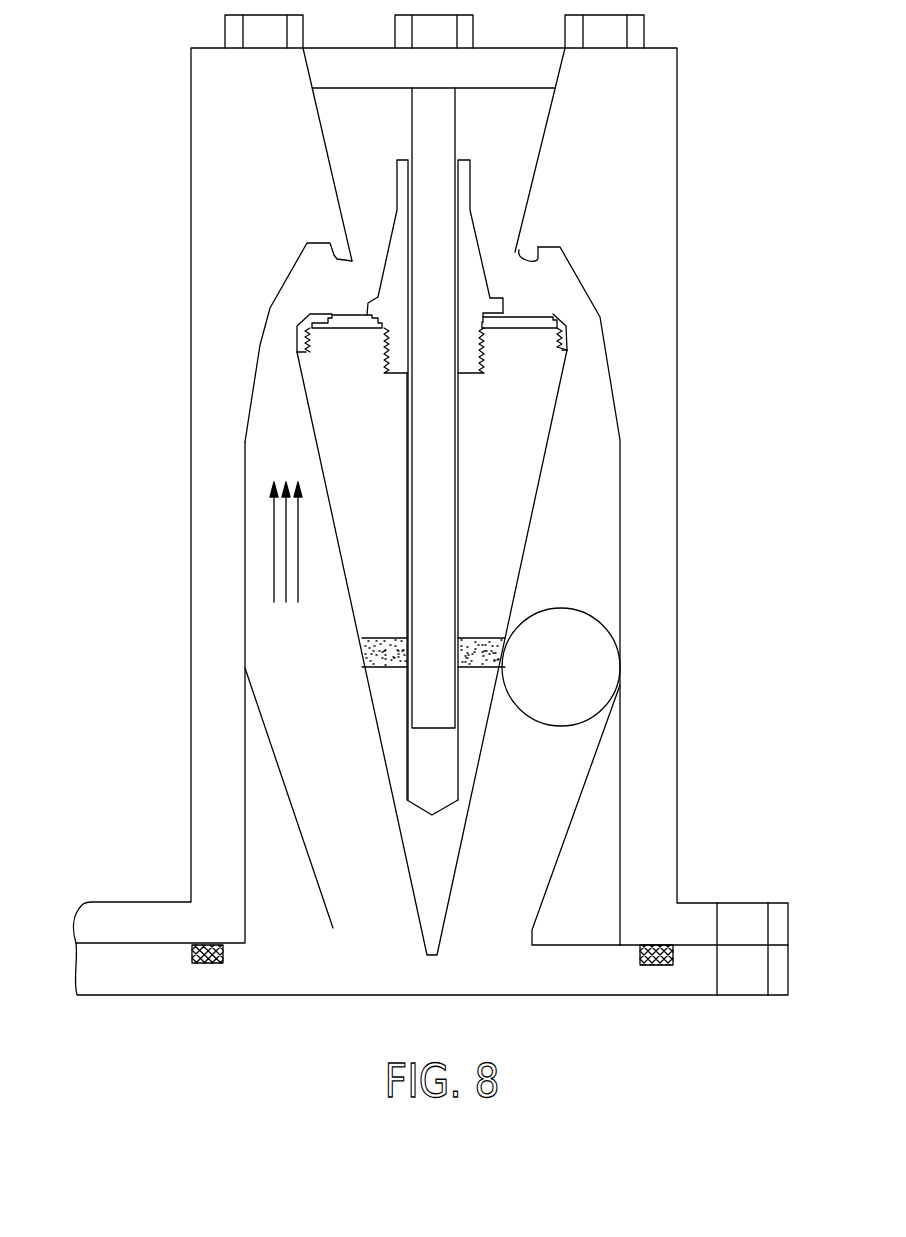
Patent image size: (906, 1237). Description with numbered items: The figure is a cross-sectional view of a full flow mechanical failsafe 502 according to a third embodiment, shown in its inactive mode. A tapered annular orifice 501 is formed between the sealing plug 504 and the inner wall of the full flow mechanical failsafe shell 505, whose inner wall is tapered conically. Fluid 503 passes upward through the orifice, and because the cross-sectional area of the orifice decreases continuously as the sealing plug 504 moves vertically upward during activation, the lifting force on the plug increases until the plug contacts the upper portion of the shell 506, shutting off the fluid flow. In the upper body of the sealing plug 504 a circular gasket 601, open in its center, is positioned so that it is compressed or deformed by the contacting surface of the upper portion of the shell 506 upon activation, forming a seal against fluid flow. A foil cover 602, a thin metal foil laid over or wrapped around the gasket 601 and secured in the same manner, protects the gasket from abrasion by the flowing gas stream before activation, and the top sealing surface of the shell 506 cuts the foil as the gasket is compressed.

The tapered annular orifice 501 is at (278, 348).
The full flow mechanical failsafe 502 is at (658, 510).
The fluid 503 is at (285, 613).
The sealing plug 504 is at (338, 445).
The full flow mechanical failsafe shell 505 is at (627, 403).
The upper portion of the shell 506 is at (518, 250).
The circular gasket 601 is at (532, 322).
The foil cover 602 is at (524, 313).